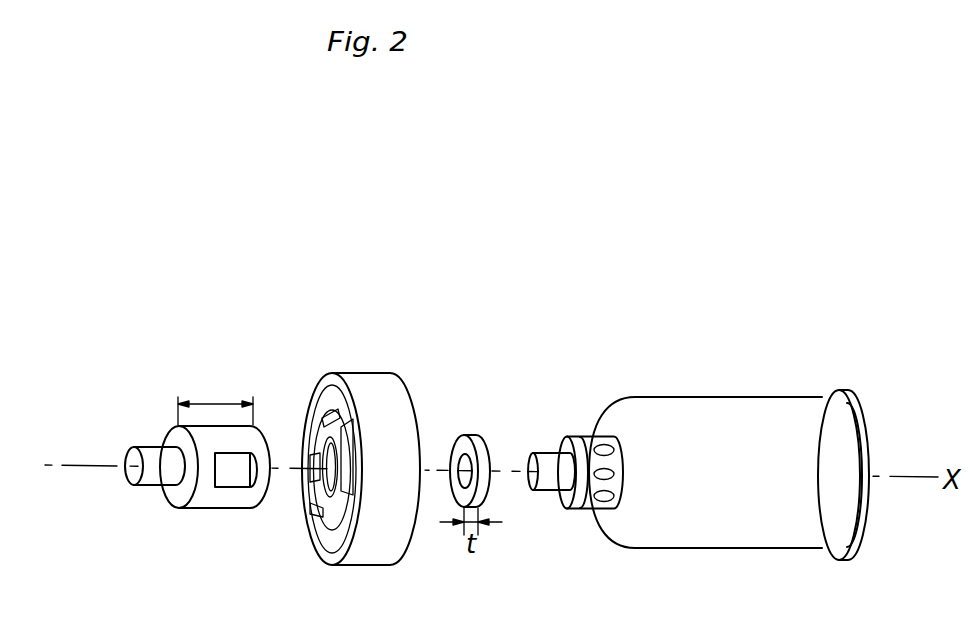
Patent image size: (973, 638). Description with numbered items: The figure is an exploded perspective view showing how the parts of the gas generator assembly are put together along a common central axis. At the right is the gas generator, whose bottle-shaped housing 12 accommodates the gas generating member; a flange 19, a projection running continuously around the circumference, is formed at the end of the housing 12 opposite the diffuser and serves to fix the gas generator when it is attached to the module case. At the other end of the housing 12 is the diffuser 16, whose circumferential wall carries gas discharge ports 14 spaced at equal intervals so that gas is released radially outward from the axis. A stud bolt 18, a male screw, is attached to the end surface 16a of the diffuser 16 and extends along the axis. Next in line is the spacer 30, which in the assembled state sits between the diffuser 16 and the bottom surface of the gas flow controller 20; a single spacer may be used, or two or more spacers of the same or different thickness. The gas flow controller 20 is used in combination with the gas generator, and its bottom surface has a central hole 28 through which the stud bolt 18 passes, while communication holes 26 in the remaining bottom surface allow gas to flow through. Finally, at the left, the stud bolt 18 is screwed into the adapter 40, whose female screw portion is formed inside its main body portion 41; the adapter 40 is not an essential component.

The housing 12 is at (707, 417).
The gas discharge ports 14 is at (600, 498).
The diffuser 16 is at (576, 476).
The end surface 16a is at (565, 509).
The stud bolt 18 is at (547, 455).
The flange 19 is at (838, 390).
The gas flow controller 20 is at (368, 385).
The communication holes 26 is at (330, 535).
The central hole 28 is at (330, 455).
The spacer 30 is at (458, 440).
The adapter 40 is at (191, 524).
The main body portion 41 is at (215, 398).